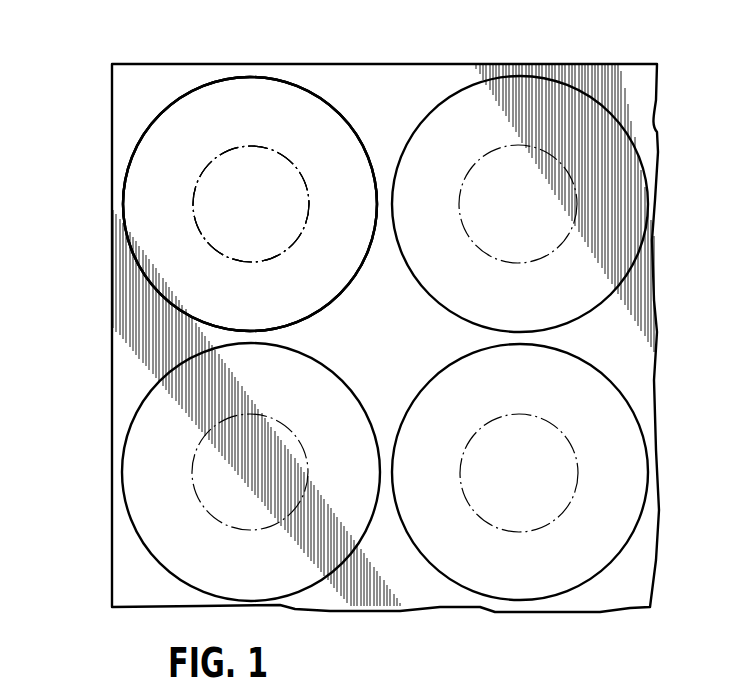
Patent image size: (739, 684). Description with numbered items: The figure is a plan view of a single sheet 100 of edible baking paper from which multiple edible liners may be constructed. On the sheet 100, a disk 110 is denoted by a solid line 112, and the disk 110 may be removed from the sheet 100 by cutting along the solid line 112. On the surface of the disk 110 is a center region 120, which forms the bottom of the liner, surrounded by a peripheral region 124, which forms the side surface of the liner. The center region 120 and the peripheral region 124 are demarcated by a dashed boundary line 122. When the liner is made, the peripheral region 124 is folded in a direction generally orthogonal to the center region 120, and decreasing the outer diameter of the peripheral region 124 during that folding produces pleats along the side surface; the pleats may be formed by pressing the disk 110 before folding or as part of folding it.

The sheet 100 is at (563, 51).
The disk 110 is at (258, 110).
The solid line 112 is at (155, 118).
The center region 120 is at (259, 221).
The dashed boundary line 122 is at (200, 172).
The peripheral region 124 is at (291, 310).